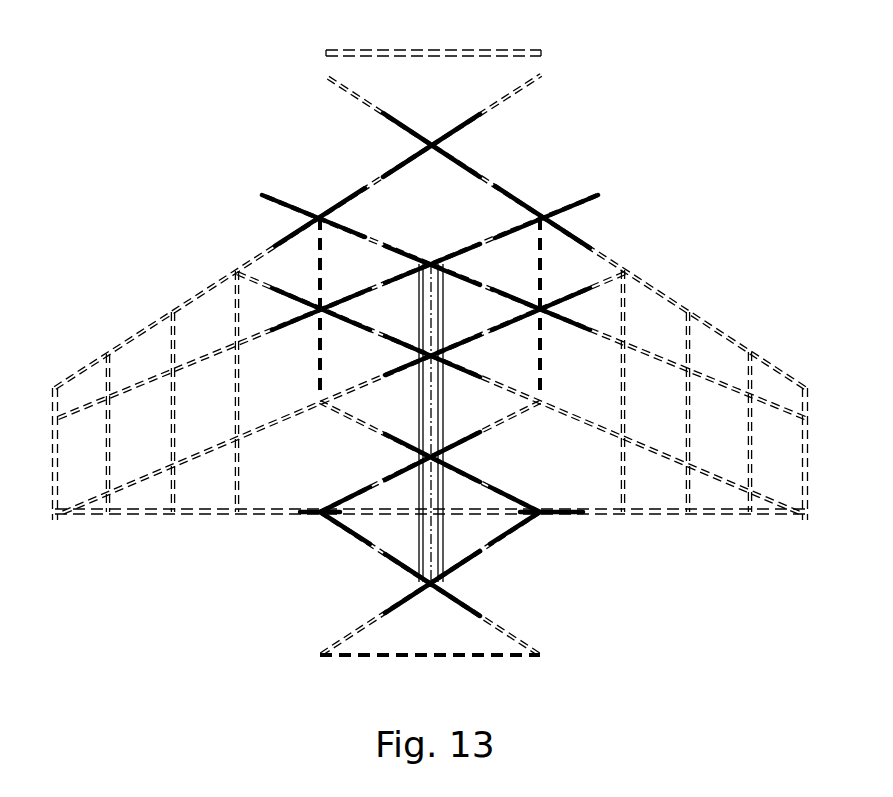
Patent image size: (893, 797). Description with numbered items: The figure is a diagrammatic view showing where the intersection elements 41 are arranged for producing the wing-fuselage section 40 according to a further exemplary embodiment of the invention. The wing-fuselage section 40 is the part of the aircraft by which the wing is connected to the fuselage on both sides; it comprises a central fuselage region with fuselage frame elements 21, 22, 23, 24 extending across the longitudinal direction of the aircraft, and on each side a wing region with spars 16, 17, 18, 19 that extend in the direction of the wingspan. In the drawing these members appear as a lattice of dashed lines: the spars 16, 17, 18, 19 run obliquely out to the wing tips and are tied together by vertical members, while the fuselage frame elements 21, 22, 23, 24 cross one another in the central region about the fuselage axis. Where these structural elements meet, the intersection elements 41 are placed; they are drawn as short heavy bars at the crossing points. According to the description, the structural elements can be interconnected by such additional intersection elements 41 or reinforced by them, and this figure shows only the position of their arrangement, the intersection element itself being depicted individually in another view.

The wing-fuselage section 40 is at (430, 353).
The intersection element 41 is at (452, 153).
The spar 16 is at (260, 252).
The spar 17 is at (158, 375).
The spar 18 is at (145, 483).
The spar 19 is at (197, 514).
The fuselage frame element 21 is at (497, 187).
The fuselage frame element 22 is at (490, 288).
The fuselage frame element 23 is at (490, 383).
The fuselage frame element 24 is at (363, 430).